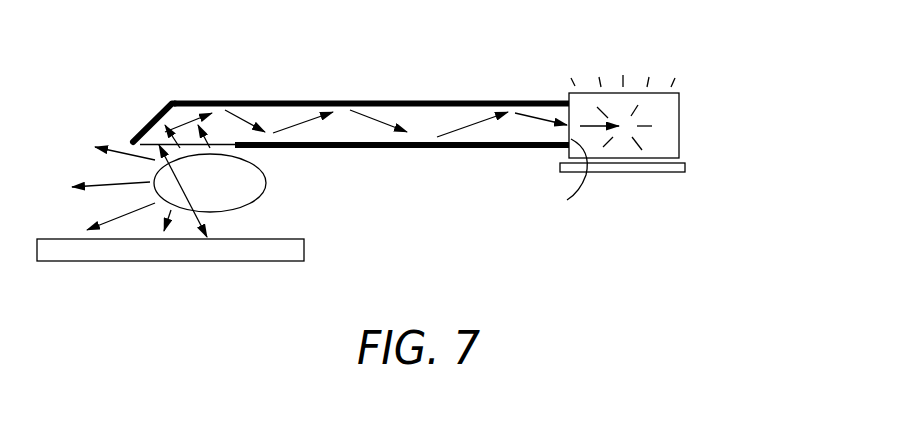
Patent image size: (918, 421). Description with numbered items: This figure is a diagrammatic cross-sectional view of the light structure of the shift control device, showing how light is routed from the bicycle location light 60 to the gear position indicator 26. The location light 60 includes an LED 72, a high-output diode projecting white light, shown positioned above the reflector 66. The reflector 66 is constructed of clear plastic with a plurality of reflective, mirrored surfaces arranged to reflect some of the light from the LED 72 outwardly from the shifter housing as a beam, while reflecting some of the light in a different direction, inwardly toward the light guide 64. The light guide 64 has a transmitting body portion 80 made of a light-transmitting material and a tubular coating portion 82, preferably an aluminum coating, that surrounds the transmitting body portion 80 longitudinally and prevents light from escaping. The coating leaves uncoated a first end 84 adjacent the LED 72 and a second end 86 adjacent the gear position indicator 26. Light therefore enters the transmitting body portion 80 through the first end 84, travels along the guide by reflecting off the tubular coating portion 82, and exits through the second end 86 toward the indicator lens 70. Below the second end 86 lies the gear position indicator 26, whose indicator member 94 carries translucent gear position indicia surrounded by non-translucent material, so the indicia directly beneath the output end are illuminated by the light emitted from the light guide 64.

The gear position indicator 26 is at (683, 203).
The bicycle location light 60 is at (270, 183).
The light guide 64 is at (392, 101).
The reflector 66 is at (125, 262).
The indicator lens 70 is at (706, 113).
The LED 72 is at (252, 201).
The transmitting body portion 80 is at (427, 122).
The tubular coating portion 82 is at (468, 148).
The first end 84 is at (143, 140).
The second end 86 is at (567, 200).
The indicator member 94 is at (648, 173).